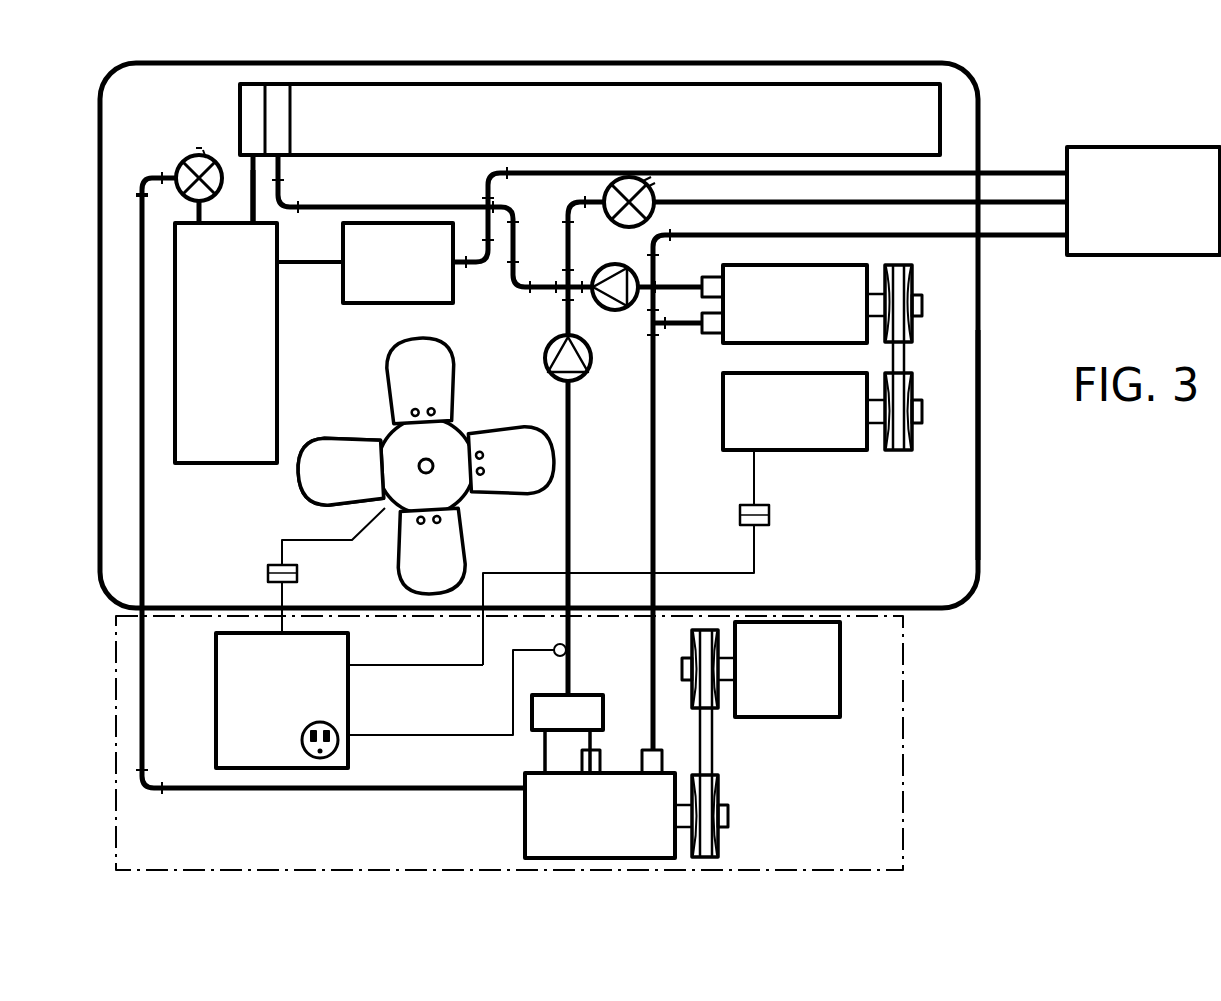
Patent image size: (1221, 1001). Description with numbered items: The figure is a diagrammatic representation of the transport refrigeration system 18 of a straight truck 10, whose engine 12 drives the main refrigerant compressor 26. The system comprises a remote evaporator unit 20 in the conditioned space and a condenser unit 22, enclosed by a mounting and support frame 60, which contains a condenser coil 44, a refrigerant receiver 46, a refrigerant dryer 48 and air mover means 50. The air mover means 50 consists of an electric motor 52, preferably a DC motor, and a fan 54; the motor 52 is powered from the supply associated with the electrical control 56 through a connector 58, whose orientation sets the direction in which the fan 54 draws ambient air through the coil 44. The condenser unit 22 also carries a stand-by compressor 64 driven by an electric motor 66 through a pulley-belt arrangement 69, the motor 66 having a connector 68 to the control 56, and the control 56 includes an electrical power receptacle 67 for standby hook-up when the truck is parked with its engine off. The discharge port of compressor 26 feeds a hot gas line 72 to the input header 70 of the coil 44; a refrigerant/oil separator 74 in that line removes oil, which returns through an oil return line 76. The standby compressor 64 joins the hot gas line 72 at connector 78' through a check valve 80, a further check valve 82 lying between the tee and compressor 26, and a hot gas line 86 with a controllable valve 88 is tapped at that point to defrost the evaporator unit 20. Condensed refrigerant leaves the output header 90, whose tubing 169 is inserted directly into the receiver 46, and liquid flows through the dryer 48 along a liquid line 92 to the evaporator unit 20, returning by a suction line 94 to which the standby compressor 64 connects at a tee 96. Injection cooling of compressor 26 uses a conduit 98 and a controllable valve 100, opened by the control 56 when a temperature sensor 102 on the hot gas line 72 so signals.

The straight truck 10 is at (904, 760).
The engine 12 is at (804, 720).
The transport refrigeration system 18 is at (1018, 100).
The evaporator unit 20 is at (1120, 256).
The condenser unit 22 is at (979, 428).
The refrigerant compressor 26 is at (525, 834).
The condenser coil 44 is at (340, 157).
The refrigerant receiver 46 is at (278, 404).
The refrigerant dryer 48 is at (400, 305).
The air mover means 50 is at (410, 465).
The electric motor 52 is at (470, 421).
The fan 54 is at (320, 500).
The electrical control 56 is at (216, 735).
The connector 58 is at (268, 575).
The mounting and support frame 60 is at (979, 513).
The refrigerant compressor 64 is at (752, 345).
The electric motor 66 is at (794, 452).
The electrical power receptacle 67 is at (340, 757).
The connector 68 is at (740, 519).
The pulley-belt arrangement 69 is at (904, 365).
The input header 70 is at (290, 133).
The hot gas line 72 is at (574, 446).
The refrigerant/oil separator 74 is at (604, 710).
The oil return line 76 is at (544, 750).
The connector 78' is at (487, 224).
The check valve 80 is at (606, 267).
The check valve 82 is at (546, 376).
The hot gas line 86 is at (893, 199).
The controllable valve 88 is at (652, 226).
The output header 90 is at (249, 116).
The liquid line 92 is at (1007, 170).
The suction line 94 is at (1045, 238).
The tee 96 is at (650, 318).
The conduit 98 is at (313, 791).
The controllable valve 100 is at (182, 162).
The temperature sensor 102 is at (568, 648).
The refrigerant tubing 169 is at (250, 186).